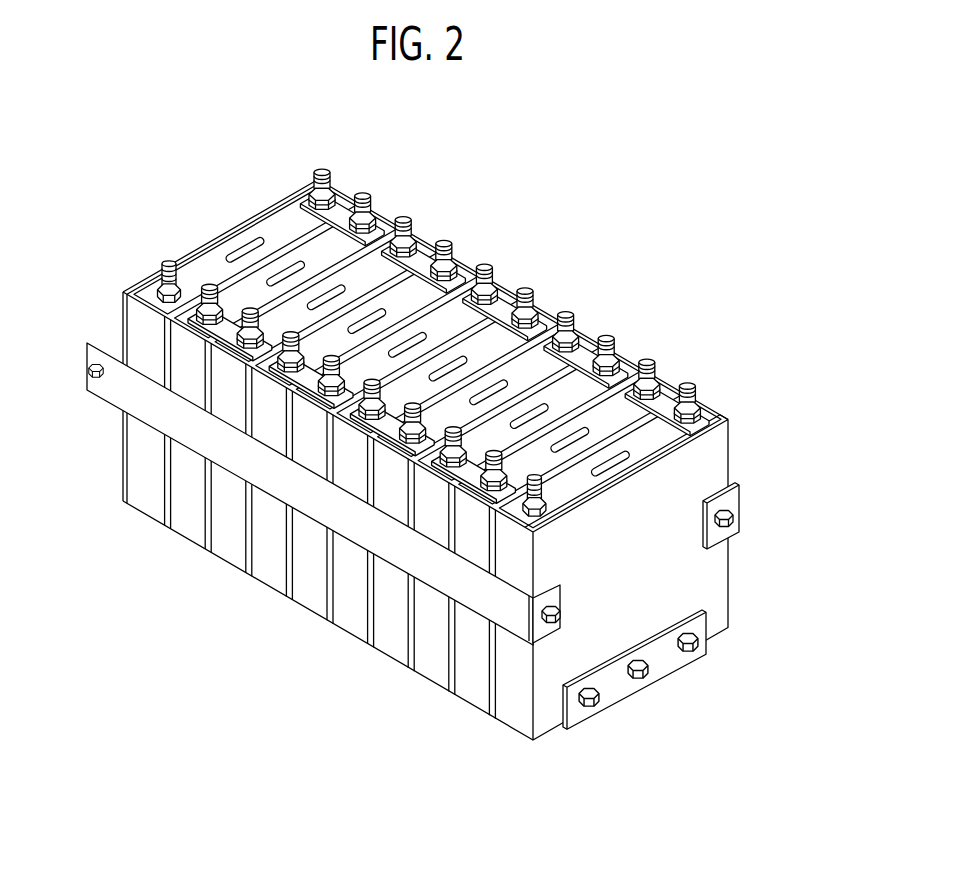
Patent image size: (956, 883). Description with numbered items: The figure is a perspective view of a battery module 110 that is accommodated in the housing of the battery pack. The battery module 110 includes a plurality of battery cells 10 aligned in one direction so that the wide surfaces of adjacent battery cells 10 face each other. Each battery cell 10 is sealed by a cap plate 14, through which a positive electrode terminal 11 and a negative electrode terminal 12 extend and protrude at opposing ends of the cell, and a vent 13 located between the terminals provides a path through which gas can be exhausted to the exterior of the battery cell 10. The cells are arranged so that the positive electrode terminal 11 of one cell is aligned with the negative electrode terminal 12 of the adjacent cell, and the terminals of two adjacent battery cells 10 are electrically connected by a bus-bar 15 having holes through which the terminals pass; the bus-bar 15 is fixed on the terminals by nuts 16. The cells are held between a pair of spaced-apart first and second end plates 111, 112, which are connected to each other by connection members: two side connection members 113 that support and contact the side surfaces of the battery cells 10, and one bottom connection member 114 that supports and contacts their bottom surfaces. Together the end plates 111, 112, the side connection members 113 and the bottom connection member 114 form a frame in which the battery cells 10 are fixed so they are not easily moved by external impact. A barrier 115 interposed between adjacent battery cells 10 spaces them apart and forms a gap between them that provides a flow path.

The battery cell 10 is at (178, 472).
The positive electrode terminal 11 is at (323, 173).
The negative electrode terminal 12 is at (167, 263).
The vent 13 is at (240, 250).
The cap plate 14 is at (278, 222).
The bus-bar 15 is at (662, 395).
The nut 16 is at (607, 352).
The battery module 110 is at (666, 244).
The first end plate 111 is at (712, 463).
The second end plate 112 is at (121, 447).
The side connection member 113 is at (745, 512).
The bottom connection member 114 is at (657, 655).
The barrier 115 is at (333, 576).